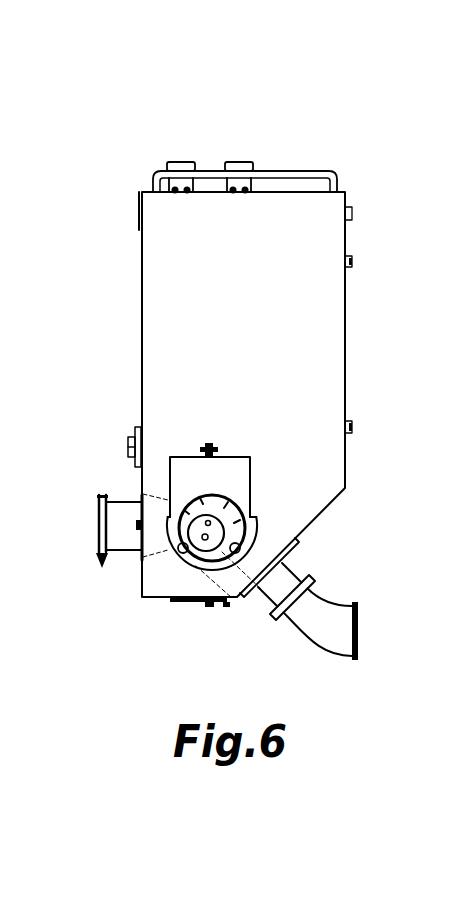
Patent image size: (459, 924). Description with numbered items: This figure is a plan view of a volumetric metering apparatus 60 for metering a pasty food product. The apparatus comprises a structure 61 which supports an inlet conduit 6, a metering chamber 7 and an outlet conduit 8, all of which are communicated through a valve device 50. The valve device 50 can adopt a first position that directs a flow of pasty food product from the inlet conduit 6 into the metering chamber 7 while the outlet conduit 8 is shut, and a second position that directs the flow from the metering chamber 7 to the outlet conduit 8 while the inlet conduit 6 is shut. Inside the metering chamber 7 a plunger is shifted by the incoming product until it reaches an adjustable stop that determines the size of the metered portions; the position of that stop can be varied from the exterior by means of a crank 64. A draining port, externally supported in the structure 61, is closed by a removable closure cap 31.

The volumetric metering apparatus 60 is at (183, 110).
The structure 61 is at (339, 345).
The removable closure cap 31 is at (130, 440).
The inlet conduit 6 is at (122, 551).
The valve device 50 is at (176, 574).
The metering chamber 7 is at (247, 510).
The crank 64 is at (237, 540).
The outlet conduit 8 is at (255, 632).